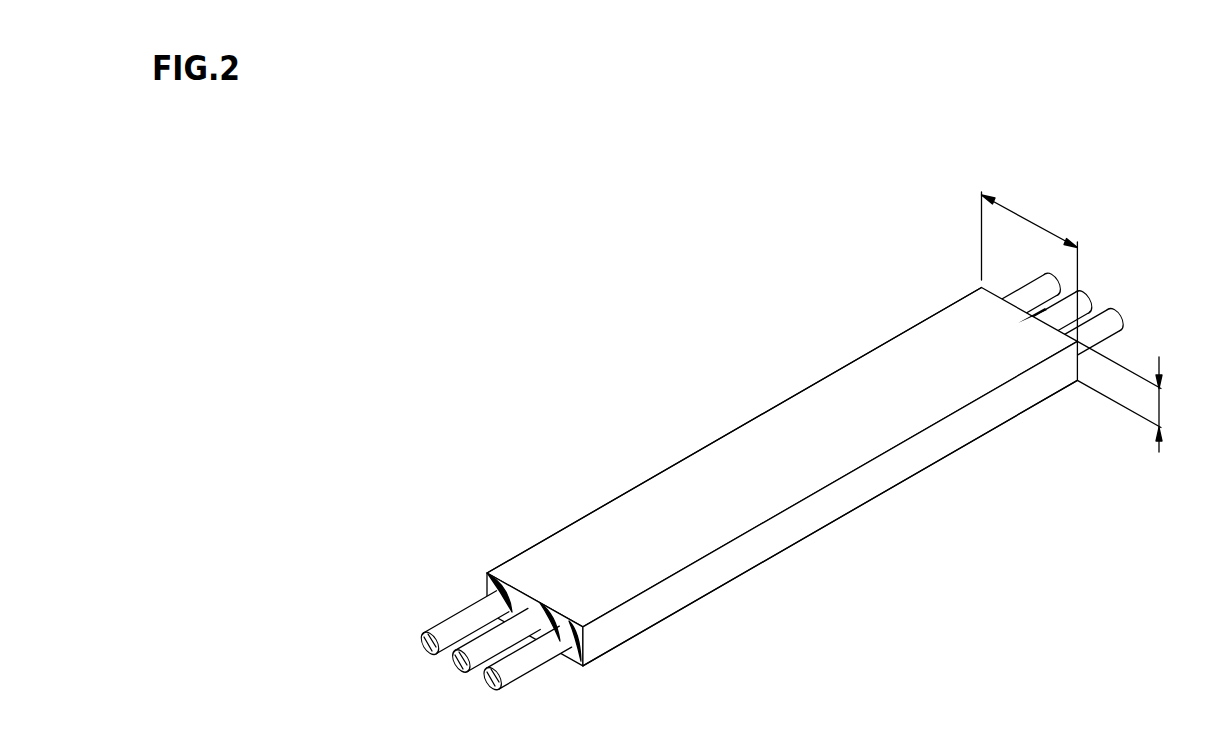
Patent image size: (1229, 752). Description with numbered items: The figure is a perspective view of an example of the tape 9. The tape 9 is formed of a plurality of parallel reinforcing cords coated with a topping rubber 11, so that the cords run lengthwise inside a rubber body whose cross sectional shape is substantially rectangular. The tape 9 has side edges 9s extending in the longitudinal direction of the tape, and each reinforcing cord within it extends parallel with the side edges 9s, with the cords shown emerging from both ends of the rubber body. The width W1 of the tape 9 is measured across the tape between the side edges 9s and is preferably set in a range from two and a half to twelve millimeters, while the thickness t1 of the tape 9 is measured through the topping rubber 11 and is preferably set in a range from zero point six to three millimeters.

The tape 9 is at (798, 432).
The side edges 9s is at (682, 453).
The topping rubber 11 is at (488, 575).
The width of the tape W1 is at (1030, 263).
The thickness of the tape t1 is at (1130, 396).